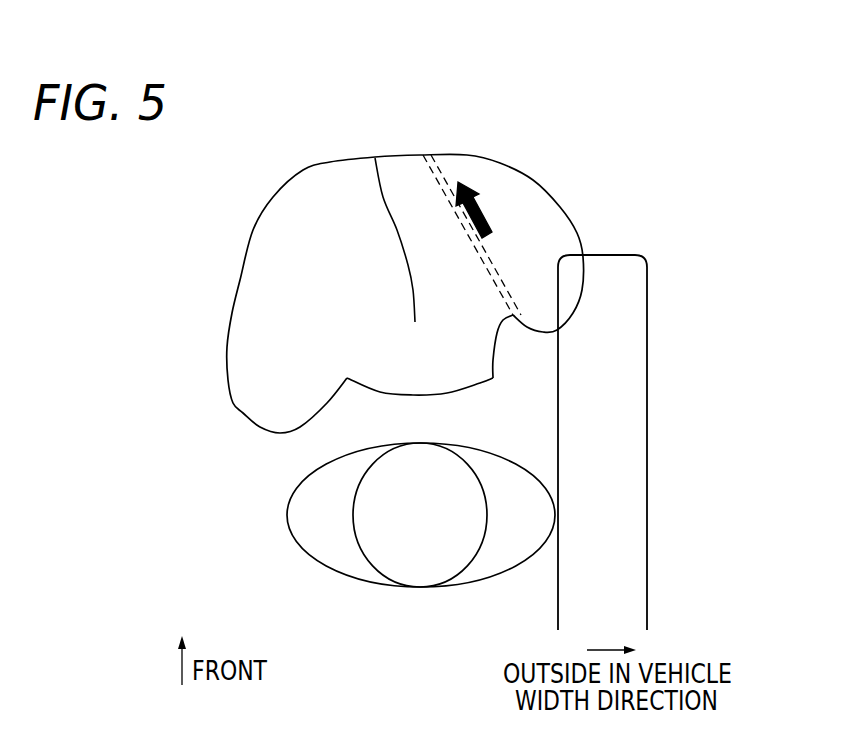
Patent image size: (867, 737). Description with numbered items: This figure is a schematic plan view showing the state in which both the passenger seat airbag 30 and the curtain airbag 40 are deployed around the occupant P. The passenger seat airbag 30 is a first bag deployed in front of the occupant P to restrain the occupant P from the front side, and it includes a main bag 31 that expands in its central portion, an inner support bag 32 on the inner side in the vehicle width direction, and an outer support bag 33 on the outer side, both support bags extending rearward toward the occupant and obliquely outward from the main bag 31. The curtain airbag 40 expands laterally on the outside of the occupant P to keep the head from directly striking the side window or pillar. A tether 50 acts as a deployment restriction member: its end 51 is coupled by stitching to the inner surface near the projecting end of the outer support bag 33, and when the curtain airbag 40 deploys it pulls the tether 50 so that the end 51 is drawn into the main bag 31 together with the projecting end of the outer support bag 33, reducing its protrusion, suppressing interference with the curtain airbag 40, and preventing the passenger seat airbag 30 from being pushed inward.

The passenger seat airbag 30 is at (308, 153).
The main bag 31 is at (375, 158).
The inner support bag 32 is at (232, 403).
The outer support bag 33 is at (585, 273).
The curtain airbag 40 is at (648, 478).
The tether 50 is at (487, 262).
The one end of the tether 51 is at (517, 318).
The occupant P is at (287, 512).